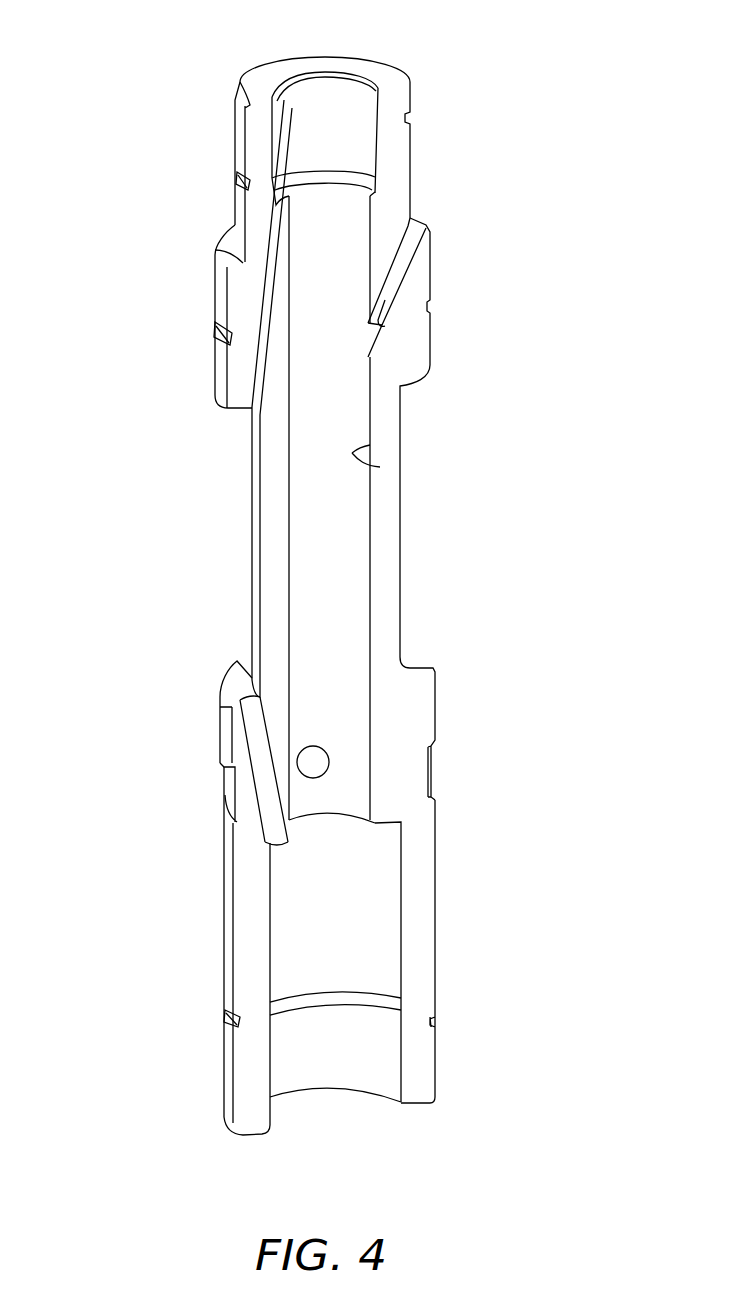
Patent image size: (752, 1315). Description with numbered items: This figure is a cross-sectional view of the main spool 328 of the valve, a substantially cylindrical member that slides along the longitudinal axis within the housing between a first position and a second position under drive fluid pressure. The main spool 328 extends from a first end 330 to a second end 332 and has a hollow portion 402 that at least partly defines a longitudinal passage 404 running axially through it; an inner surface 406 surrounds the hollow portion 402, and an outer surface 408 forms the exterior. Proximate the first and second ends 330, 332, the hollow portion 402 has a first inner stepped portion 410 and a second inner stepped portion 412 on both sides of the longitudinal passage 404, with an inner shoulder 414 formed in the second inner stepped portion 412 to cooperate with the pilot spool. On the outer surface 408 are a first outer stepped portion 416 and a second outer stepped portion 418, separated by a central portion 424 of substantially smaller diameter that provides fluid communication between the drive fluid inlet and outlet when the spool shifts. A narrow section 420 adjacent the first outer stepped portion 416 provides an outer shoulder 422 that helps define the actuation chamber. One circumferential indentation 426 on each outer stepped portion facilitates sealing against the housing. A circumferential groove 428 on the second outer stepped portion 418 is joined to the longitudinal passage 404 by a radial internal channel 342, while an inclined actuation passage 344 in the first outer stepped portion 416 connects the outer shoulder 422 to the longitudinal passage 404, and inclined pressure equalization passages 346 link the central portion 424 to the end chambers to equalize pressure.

The main spool 328 is at (456, 98).
The first end 330 is at (175, 110).
The second end 332 is at (194, 1081).
The internal channel 342 is at (320, 756).
The actuation passage 344 is at (382, 325).
The pressure equalization passage 346 is at (248, 408).
The hollow portion 402 is at (321, 1108).
The longitudinal passage 404 is at (357, 613).
The inner surface 406 is at (380, 467).
The outer surface 408 is at (400, 418).
The first inner stepped portion 410 is at (361, 169).
The second inner stepped portion 412 is at (381, 835).
The inner shoulder 414 is at (380, 823).
The first outer stepped portion 416 is at (455, 274).
The second outer stepped portion 418 is at (456, 696).
The narrow section 420 is at (434, 140).
The outer shoulder 422 is at (231, 248).
The central portion 424 is at (410, 561).
The circumferential indentation 426 is at (233, 183).
The circumferential groove 428 is at (227, 792).